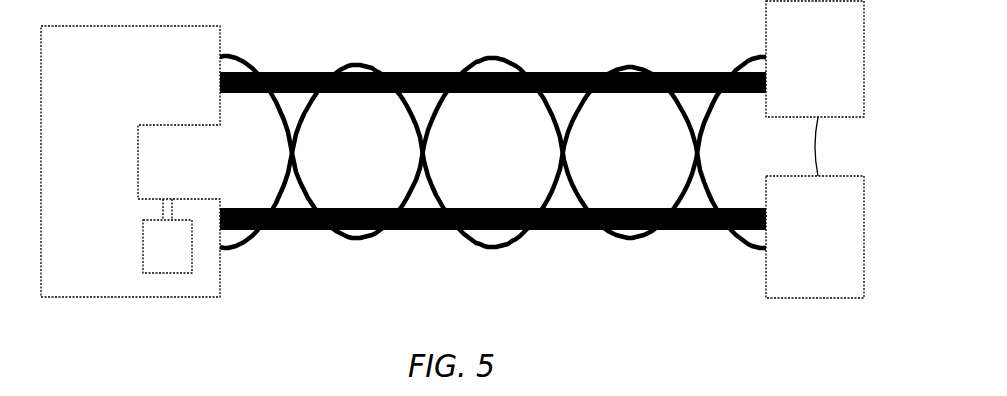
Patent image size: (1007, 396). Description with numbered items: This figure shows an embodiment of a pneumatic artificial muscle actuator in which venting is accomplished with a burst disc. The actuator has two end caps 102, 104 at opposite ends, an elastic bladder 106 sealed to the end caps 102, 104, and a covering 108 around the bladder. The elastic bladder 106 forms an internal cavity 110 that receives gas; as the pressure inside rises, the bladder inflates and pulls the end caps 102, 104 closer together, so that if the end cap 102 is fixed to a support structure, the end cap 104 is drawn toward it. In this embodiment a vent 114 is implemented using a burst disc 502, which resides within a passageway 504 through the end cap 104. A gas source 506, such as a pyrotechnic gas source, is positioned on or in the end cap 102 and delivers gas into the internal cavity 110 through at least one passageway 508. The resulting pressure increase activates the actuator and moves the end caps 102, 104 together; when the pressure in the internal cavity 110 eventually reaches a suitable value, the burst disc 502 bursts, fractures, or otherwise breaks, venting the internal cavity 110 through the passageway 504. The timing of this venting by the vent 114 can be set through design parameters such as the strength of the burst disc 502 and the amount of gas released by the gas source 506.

The end cap 102 is at (171, 175).
The end cap 104 is at (773, 161).
The elastic bladder 106 is at (304, 64).
The covering 108 is at (492, 52).
The internal cavity 110 is at (507, 155).
The vent 114 is at (778, 92).
The burst disc 502 is at (801, 157).
The passageway 504 is at (846, 184).
The gas source 506 is at (137, 261).
The passageway 508 is at (154, 210).